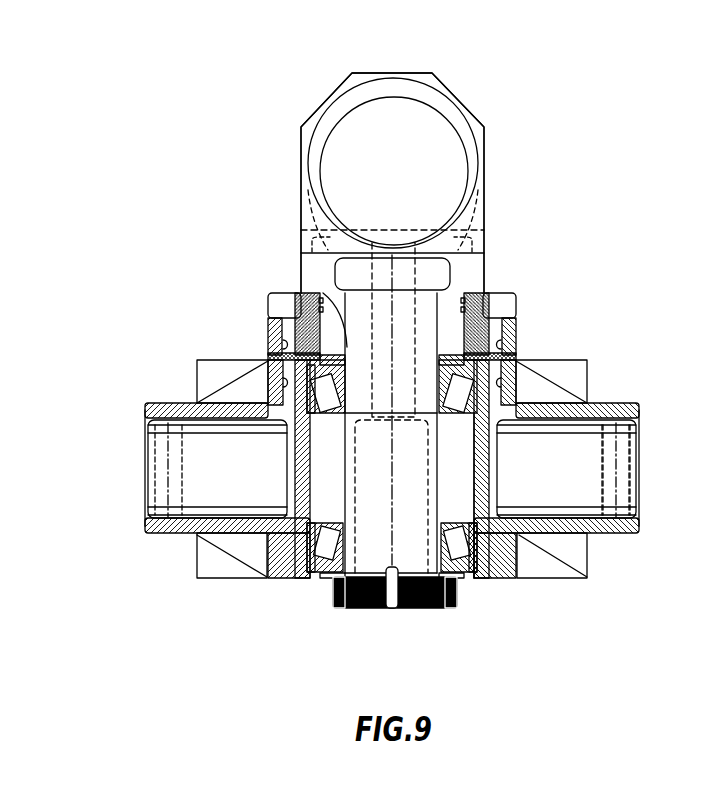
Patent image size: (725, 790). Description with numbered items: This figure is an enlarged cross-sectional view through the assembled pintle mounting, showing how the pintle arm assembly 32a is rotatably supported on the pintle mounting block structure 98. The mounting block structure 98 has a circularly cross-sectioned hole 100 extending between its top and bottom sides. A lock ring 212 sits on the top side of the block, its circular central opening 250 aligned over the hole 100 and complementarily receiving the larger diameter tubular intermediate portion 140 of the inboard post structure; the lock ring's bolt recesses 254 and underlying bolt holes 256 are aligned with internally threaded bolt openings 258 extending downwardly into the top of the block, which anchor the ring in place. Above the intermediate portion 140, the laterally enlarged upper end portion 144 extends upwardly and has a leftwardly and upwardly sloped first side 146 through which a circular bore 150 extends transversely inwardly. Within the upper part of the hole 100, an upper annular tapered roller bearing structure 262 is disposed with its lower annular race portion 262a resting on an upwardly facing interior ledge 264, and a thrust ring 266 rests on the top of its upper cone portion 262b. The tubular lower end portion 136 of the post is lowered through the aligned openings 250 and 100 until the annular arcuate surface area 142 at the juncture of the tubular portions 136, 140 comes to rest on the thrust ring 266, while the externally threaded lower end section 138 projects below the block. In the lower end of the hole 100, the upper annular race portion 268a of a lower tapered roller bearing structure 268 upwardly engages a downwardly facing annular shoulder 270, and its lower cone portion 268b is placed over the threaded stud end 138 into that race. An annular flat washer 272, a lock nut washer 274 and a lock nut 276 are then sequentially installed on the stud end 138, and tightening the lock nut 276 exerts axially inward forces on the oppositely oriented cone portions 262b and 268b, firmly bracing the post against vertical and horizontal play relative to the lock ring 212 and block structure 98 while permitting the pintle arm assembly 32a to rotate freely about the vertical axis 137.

The pintle arm assembly 32a is at (492, 78).
The circular bore 150 is at (345, 125).
The upper end portion 144 is at (486, 190).
The first side 146 is at (307, 230).
The thrust ring 266 is at (353, 300).
The upper bearing cone portion 262b is at (348, 350).
The annular arcuate surface area 142 is at (443, 350).
The circular central opening 250 is at (325, 293).
The bolt recesses 254 is at (282, 307).
The tubular intermediate portion 140 is at (503, 309).
The lock ring 212 is at (263, 333).
The bolt holes 256 is at (503, 341).
The bolt openings 258 is at (268, 360).
The interior ledge 264 is at (605, 392).
The lower annular race portion 262a is at (298, 372).
The upper annular tapered roller bearing structure 262 is at (308, 420).
The hole 100 is at (462, 447).
The tubular lower end portion 136 is at (440, 490).
The lower cone portion 268b is at (333, 518).
The annular shoulder 270 is at (488, 510).
The pintle mounting block structure 98 is at (187, 537).
The lower tapered roller bearing structure 268 is at (312, 580).
The upper annular race portion 268a is at (480, 542).
The lock nut washer 274 is at (325, 583).
The lock nut 276 is at (341, 602).
The vertical axis 137 is at (392, 543).
The externally threaded lower end section 138 is at (420, 604).
The annular flat washer 272 is at (468, 582).